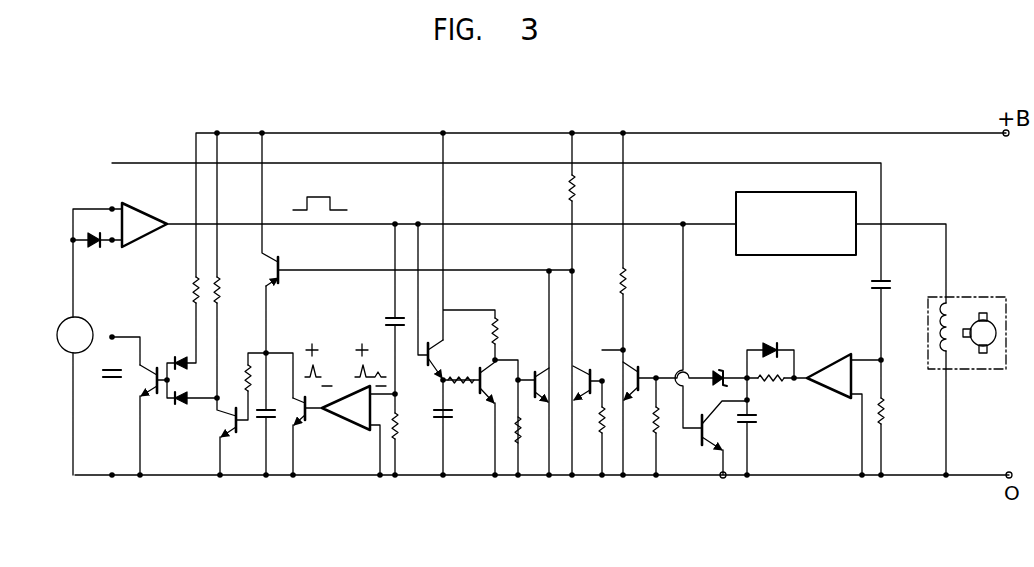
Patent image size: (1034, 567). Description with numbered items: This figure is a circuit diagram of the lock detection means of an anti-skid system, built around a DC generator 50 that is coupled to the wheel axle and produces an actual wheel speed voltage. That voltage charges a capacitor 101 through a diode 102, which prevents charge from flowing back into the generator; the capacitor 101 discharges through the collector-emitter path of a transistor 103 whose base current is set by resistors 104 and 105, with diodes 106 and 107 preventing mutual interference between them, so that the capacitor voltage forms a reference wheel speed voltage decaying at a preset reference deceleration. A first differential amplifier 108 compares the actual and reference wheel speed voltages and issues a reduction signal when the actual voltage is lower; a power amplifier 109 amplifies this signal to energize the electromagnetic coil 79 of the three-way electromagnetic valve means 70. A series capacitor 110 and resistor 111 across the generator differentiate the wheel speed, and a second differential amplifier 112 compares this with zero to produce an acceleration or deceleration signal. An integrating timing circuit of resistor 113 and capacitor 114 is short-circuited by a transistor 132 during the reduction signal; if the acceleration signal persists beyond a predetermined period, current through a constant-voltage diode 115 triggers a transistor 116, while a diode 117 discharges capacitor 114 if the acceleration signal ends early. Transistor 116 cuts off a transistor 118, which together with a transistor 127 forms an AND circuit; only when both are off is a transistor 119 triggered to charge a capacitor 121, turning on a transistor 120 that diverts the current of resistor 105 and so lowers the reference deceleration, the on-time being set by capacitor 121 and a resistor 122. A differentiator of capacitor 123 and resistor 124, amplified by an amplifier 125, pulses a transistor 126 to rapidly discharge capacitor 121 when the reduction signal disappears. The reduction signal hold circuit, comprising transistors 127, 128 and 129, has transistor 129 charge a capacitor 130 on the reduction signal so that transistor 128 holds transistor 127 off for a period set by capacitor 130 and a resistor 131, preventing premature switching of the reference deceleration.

The DC generator 50 is at (58, 341).
The three-way electromagnetic valve means 70 is at (975, 297).
The electromagnetic coil 79 is at (950, 356).
The capacitor 101 is at (109, 383).
The diode 102 is at (97, 232).
The transistor 103 is at (150, 398).
The resistor 104 is at (190, 290).
The resistor 105 is at (220, 290).
The diode 106 is at (178, 356).
The diode 107 is at (185, 406).
The first differential amplifier 108 is at (150, 207).
The power amplifier 109 is at (773, 192).
The capacitor 110 is at (885, 278).
The resistor 111 is at (887, 410).
The second differential amplifier 112 is at (830, 360).
The resistor 113 is at (778, 387).
The capacitor 114 is at (757, 418).
The constant-voltage diode 115 is at (720, 370).
The transistor 116 is at (630, 365).
The diode 117 is at (775, 345).
The transistor 118 is at (580, 368).
The transistor 119 is at (273, 282).
The transistor 120 is at (230, 432).
The capacitor 121 is at (272, 430).
The resistor 122 is at (247, 368).
The capacitor 123 is at (386, 322).
The resistor 124 is at (402, 427).
The amplifier 125 is at (342, 418).
The transistor 126 is at (300, 422).
The transistor 127 is at (540, 360).
The transistor 128 is at (480, 397).
The transistor 129 is at (433, 372).
The capacitor 130 is at (452, 423).
The resistor 131 is at (463, 375).
The transistor 132 is at (703, 432).